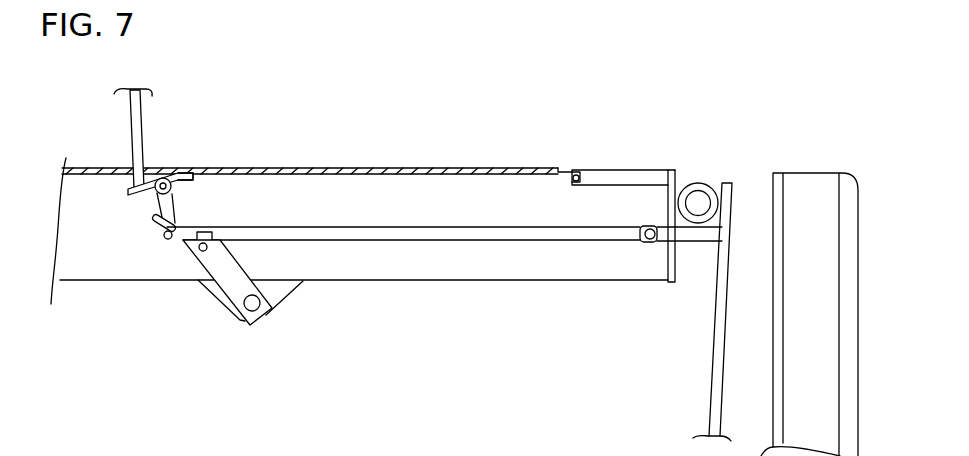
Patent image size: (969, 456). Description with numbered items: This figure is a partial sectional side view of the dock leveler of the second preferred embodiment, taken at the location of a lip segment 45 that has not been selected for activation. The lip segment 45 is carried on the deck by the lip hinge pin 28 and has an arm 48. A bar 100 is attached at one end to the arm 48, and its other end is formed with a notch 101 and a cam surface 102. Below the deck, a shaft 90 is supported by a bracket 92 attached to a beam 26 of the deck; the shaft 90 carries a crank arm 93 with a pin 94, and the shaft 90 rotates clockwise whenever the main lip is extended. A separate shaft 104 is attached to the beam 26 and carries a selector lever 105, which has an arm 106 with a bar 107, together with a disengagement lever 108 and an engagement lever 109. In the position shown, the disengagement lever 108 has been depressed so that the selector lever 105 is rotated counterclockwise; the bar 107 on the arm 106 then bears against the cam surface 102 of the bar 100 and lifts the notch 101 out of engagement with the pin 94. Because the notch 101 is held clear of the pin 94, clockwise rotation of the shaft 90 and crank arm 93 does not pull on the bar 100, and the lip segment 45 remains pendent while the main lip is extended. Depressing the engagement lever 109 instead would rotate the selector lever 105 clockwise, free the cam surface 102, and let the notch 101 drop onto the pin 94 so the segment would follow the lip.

The beam 26 is at (93, 282).
The lip hinge pin 28 is at (696, 190).
The lip segment 45 is at (708, 420).
The arm 48 is at (707, 243).
The shaft 90 is at (257, 305).
The bracket 92 is at (303, 282).
The crank arm 93 is at (218, 299).
The pin 94 is at (210, 247).
The bar 100 is at (405, 243).
The notch 101 is at (204, 230).
The cam surface 102 is at (154, 224).
The shaft 104 is at (163, 178).
The selector lever 105 is at (272, 141).
The arm 106 is at (177, 205).
The bar 107 is at (170, 240).
The disengagement lever 108 is at (129, 172).
The engagement lever 109 is at (184, 177).